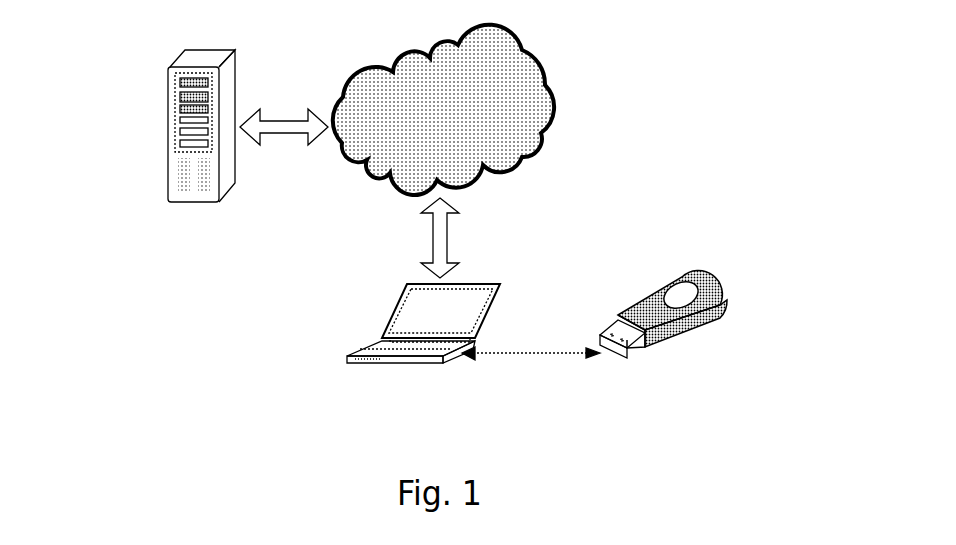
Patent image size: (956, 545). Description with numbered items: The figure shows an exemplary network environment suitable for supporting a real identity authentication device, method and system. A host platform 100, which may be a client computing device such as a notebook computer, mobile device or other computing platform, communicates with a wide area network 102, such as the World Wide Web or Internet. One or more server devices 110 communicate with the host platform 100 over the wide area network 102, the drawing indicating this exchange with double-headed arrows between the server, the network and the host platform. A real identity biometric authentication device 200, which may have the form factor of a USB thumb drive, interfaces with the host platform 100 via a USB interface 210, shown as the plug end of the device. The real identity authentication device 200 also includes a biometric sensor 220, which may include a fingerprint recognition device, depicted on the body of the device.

The server device 110 is at (168, 127).
The wide area network 102 is at (420, 55).
The host platform 100 is at (397, 317).
The real identity biometric authentication device 200 is at (671, 342).
The USB interface 210 is at (613, 327).
The biometric sensor 220 is at (683, 292).